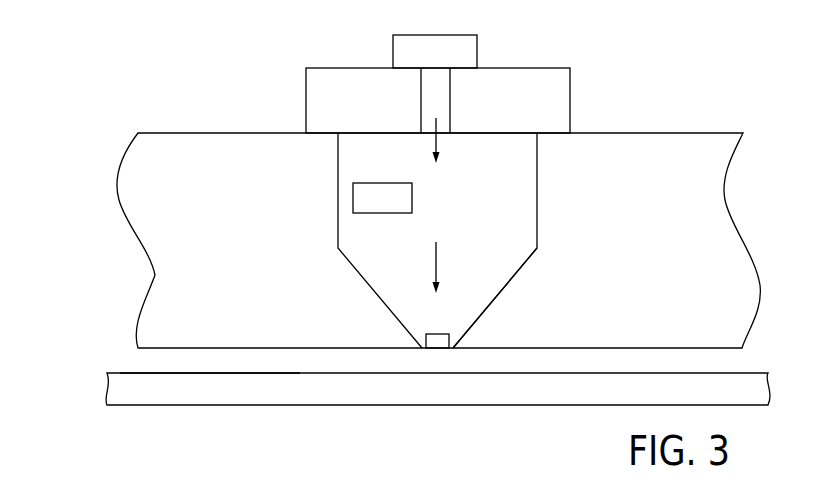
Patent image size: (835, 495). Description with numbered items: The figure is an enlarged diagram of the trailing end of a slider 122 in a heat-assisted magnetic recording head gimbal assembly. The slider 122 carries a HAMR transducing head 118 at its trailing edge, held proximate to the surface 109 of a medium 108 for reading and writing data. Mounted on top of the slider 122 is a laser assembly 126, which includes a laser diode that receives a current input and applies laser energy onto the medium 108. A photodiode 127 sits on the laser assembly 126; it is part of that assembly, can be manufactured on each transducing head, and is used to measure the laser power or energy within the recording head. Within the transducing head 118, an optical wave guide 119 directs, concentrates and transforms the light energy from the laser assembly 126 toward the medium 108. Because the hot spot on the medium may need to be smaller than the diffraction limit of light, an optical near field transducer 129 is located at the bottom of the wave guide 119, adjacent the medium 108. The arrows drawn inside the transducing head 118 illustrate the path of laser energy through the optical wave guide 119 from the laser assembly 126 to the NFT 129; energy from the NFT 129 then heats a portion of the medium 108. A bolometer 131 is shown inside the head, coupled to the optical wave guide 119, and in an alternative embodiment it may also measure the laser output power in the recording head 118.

The slider 122 is at (132, 82).
The laser assembly 126 is at (550, 50).
The photodiode 127 is at (454, 61).
The bolometer 131 is at (400, 208).
The transducing head 118 is at (585, 223).
The optical wave guide 119 is at (514, 277).
The optical near field transducer (NFT) 129 is at (437, 334).
The surface of medium 109 is at (130, 373).
The medium 108 is at (733, 390).